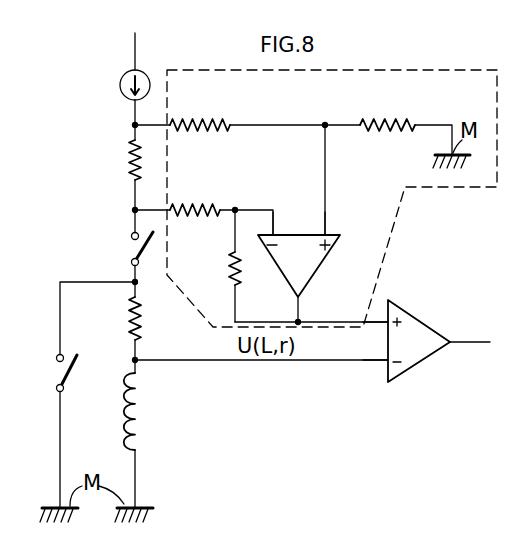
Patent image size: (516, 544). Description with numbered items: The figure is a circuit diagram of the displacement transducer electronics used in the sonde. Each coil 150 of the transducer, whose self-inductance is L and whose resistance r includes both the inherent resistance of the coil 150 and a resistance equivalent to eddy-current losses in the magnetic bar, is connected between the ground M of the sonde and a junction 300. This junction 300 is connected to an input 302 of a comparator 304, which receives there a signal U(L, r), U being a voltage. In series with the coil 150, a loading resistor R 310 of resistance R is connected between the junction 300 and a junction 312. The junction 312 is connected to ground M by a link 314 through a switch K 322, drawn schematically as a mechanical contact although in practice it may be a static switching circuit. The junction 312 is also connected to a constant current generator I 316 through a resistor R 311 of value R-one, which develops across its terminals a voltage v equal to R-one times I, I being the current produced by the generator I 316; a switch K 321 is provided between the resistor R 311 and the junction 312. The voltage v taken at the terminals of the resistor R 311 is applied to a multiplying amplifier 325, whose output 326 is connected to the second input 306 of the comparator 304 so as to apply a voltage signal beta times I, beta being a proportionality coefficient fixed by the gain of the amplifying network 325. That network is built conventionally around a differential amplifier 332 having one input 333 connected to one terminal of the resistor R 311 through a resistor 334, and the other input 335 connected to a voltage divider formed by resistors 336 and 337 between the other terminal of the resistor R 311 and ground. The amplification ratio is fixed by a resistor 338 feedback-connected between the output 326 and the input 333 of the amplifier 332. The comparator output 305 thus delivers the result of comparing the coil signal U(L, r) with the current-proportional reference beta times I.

The constant current generator I 316 is at (122, 75).
The resistor R 311 is at (129, 160).
The resistor 336 is at (223, 88).
The resistor 337 is at (408, 95).
The resistor 334 is at (223, 186).
The input 333 is at (273, 232).
The other input 335 is at (327, 232).
The differential amplifier 332 is at (308, 265).
The feedback resistor 338 is at (231, 277).
The output 326 is at (300, 320).
The multiplying amplifier 325 is at (408, 200).
The switch K 321 is at (131, 242).
The junction 312 is at (133, 281).
The link 314 is at (58, 310).
The loading resistor R 310 is at (165, 318).
The switch K 322 is at (88, 432).
The junction 300 is at (140, 362).
The coil 150 is at (140, 418).
The comparator 304 is at (415, 333).
The second input 306 is at (382, 317).
The input 302 is at (386, 363).
The comparator output 305 is at (451, 345).